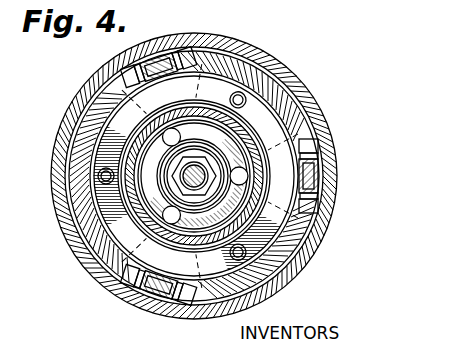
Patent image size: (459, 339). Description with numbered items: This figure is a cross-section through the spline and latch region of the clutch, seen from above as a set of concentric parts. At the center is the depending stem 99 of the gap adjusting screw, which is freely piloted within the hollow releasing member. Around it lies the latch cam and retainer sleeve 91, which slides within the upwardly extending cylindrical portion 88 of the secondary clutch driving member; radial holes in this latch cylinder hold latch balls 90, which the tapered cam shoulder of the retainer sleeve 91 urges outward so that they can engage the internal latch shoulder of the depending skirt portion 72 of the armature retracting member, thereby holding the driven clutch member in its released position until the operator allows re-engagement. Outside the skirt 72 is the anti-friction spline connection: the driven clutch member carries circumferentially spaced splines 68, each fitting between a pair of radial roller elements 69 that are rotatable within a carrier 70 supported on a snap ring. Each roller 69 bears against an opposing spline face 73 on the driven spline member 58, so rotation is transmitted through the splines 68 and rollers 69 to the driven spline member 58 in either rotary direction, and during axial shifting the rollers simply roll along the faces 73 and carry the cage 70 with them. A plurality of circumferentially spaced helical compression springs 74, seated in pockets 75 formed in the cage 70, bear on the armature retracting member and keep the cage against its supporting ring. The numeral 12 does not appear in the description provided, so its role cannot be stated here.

The housing 12 is at (216, 40).
The driven spline member 58 is at (225, 66).
The spline 68 is at (312, 167).
The roller element 69 is at (302, 151).
The carrier 70 is at (264, 142).
The depending skirt portion 72 is at (125, 192).
The spline face 73 is at (302, 145).
The helical compression spring 74 is at (244, 96).
The pocket 75 is at (262, 118).
The cylindrical portion 88 is at (163, 196).
The latch ball 90 is at (128, 222).
The latch cam and retainer sleeve 91 is at (165, 212).
The depending stem 99 is at (199, 190).